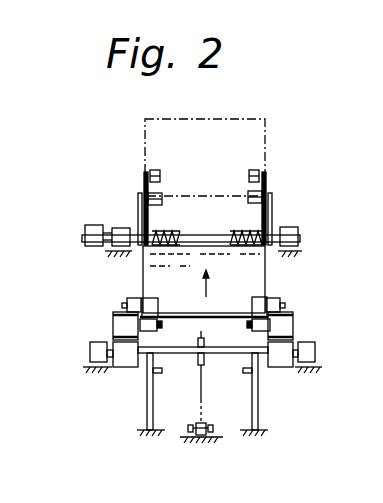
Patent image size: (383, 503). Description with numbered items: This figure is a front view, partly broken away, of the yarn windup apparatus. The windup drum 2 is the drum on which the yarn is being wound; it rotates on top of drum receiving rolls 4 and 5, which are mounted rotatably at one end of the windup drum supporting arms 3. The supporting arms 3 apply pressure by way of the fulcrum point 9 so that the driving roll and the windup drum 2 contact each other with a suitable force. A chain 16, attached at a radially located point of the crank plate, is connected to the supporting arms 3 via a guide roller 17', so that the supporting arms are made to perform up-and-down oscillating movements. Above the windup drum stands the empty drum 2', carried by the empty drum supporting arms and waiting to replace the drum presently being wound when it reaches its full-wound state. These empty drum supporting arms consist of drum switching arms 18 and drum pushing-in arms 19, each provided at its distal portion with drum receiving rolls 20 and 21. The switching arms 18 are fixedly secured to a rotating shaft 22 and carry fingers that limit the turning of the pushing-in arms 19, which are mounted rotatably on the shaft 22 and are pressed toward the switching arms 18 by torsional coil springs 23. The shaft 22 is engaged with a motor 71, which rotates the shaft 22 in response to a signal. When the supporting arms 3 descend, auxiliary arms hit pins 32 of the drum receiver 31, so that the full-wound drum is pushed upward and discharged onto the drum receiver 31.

The windup drum 2 is at (188, 279).
The empty drum 2' is at (221, 145).
The windup drum supporting arms 3 is at (113, 327).
The drum receiving roll 4 is at (154, 306).
The drum receiving roll 5 is at (160, 326).
The fulcrum point 9 is at (204, 362).
The chain 16 is at (200, 395).
The guide roller 17' is at (211, 447).
The drum switching arms 18 is at (138, 212).
The drum pushing-in arms 19 is at (144, 185).
The drum receiving roll 20 is at (162, 198).
The drum receiving roll 21 is at (158, 171).
The rotating shaft 22 is at (222, 243).
The torsional coil spring 23 is at (163, 237).
The drum receiver 31 is at (258, 416).
The pin 32 is at (250, 373).
The motor 71 is at (85, 234).